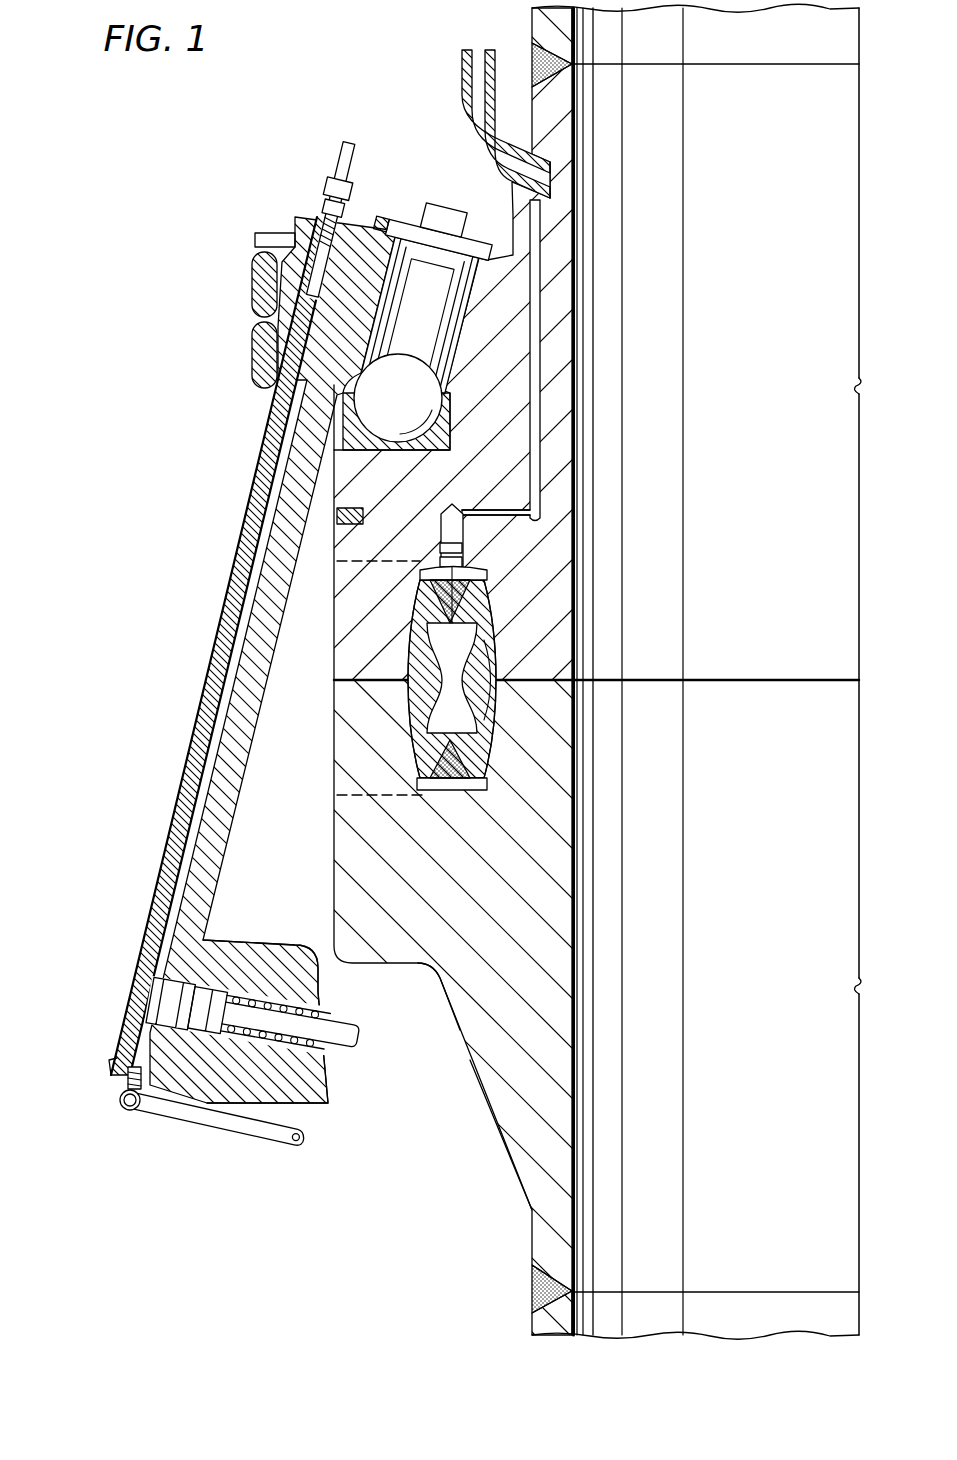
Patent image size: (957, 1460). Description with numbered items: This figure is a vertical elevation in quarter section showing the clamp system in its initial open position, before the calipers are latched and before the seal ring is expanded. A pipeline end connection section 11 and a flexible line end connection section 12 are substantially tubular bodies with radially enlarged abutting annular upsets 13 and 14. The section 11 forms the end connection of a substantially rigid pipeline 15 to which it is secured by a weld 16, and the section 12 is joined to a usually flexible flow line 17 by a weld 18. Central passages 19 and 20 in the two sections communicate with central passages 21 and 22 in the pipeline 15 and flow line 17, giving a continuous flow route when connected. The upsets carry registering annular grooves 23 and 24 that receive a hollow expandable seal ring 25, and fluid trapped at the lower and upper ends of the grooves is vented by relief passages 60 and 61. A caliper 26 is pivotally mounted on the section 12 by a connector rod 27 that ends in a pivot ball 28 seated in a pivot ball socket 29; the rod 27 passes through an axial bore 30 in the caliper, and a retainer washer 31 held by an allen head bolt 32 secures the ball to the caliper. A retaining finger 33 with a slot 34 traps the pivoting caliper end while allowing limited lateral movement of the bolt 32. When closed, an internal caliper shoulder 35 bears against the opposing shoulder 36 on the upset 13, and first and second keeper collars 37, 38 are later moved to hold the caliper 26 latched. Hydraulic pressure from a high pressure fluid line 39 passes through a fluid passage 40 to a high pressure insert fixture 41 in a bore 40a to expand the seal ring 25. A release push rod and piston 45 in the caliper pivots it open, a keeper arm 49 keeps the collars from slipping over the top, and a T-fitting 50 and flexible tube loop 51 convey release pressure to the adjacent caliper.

The pipeline end connection section 11 is at (778, 750).
The flexible line end connection section 12 is at (778, 632).
The annular upset 13 is at (352, 890).
The annular upset 14 is at (350, 616).
The pipeline 15 is at (536, 1324).
The weld 16 is at (533, 1286).
The flow line 17 is at (540, 18).
The weld 18 is at (531, 64).
The central passage 19 is at (578, 1245).
The central passage 20 is at (576, 127).
The central passage 21 is at (578, 1318).
The central passage 22 is at (574, 44).
The annular groove 23 is at (407, 714).
The annular groove 24 is at (308, 668).
The seal ring 25 is at (405, 756).
The caliper 26 is at (170, 822).
The connector rod 27 is at (402, 333).
The pivot ball 28 is at (372, 400).
The pivot ball socket 29 is at (357, 443).
The axial bore 30 is at (392, 288).
The retainer washer 31 is at (480, 262).
The allen head bolt 32 is at (443, 212).
The retaining finger 33 is at (373, 214).
The slot 34 is at (390, 220).
The internal caliper shoulder 35 is at (262, 947).
The shoulder 36 is at (400, 967).
The first keeper collar 37 is at (260, 265).
The second keeper collar 38 is at (262, 361).
The high pressure fluid line 39 is at (463, 98).
The fluid passage 40 is at (533, 362).
The bore 40a is at (452, 506).
The high pressure insert fixture 41 is at (463, 563).
The release push rod and piston 45 is at (349, 1040).
The keeper arm 49 is at (270, 235).
The T-fitting 50 is at (122, 1110).
The flexible tube loop 51 is at (238, 1138).
The relief passage 60 is at (360, 803).
The relief passage 61 is at (420, 560).